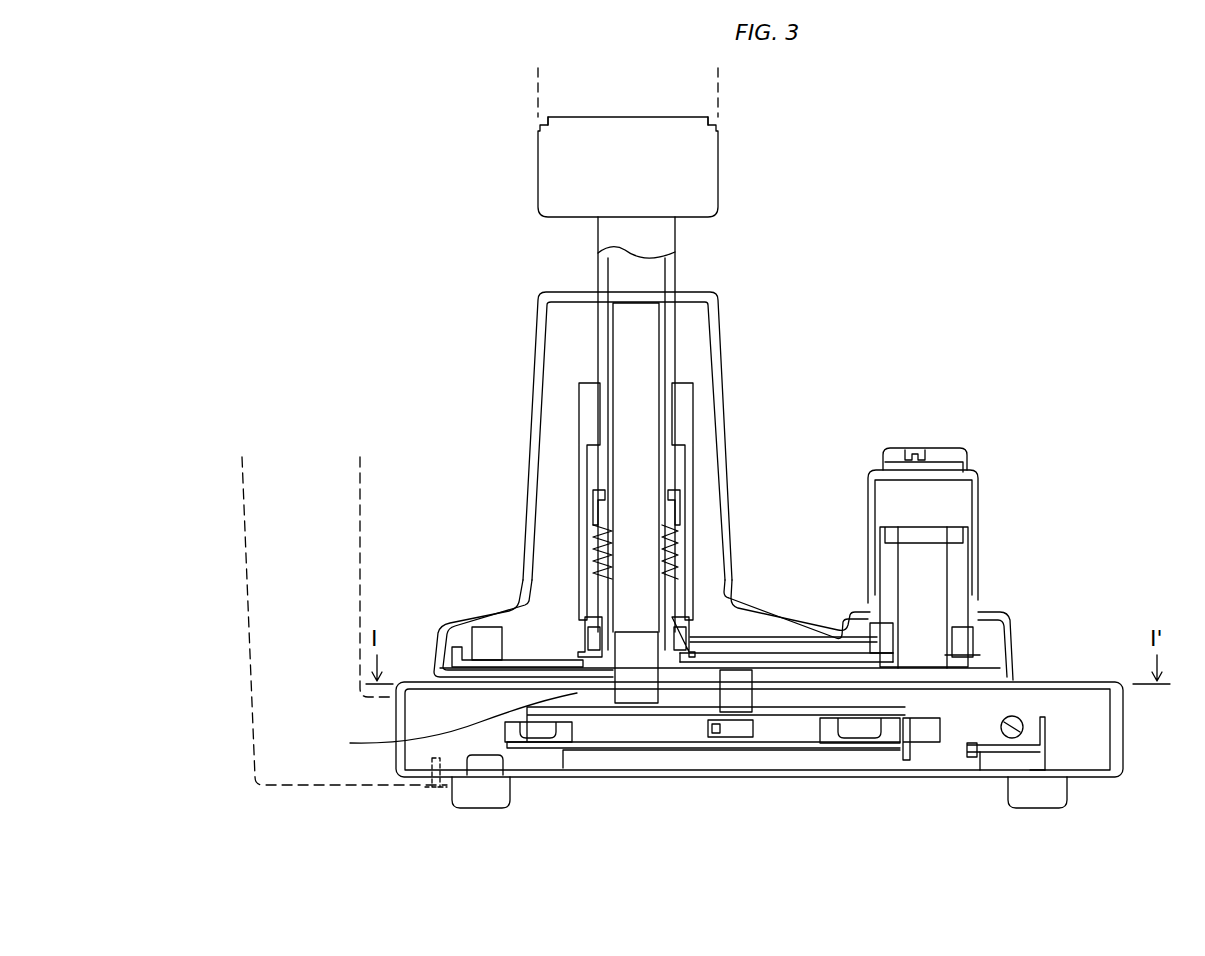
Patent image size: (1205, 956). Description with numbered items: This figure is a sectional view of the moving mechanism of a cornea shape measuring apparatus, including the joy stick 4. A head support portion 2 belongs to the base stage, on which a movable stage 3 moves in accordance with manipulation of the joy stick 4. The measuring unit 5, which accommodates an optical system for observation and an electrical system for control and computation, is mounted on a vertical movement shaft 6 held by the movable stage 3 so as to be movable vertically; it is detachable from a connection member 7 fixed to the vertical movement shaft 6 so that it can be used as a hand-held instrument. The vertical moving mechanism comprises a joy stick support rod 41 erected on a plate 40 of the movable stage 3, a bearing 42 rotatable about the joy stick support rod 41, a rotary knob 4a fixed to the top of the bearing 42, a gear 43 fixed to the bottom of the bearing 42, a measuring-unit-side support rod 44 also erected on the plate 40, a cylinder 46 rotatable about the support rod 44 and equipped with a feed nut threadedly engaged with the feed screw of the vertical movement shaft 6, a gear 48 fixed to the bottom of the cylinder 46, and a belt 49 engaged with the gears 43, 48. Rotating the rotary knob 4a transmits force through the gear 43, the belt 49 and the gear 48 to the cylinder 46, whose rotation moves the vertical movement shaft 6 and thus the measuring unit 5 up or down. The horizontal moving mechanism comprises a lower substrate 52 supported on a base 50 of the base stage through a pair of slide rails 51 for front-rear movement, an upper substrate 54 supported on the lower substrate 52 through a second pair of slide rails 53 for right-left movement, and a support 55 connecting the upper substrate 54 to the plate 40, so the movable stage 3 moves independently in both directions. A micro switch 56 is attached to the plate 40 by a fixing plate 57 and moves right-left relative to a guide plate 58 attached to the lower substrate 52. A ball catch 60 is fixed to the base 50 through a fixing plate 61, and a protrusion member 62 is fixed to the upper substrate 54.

The head support portion 2 is at (243, 602).
The movable stage 3 is at (725, 375).
The joy stick 4 is at (980, 532).
The rotary knob 4a is at (980, 523).
The measuring unit 5 is at (538, 95).
The vertical movement shaft 6 is at (602, 350).
The connection member 7 is at (700, 183).
The plate 40 is at (763, 668).
The joy stick support rod 41 is at (933, 620).
The bearing 42 is at (965, 577).
The gear 43 is at (965, 647).
The measuring-unit-side support rod 44 is at (597, 558).
The cylinder 46 is at (585, 488).
The gear 48 is at (590, 647).
The belt 49 is at (823, 647).
The base 50 is at (575, 777).
The slide rails 51 is at (622, 760).
The lower substrate 52 is at (673, 745).
The slider 53 is at (540, 732).
The upper substrate 54 is at (825, 730).
The support 55 is at (446, 725).
The micro switch 56 is at (740, 730).
The fixing plate 57 is at (723, 695).
The guide plate 58 is at (793, 740).
The ball catch 60 is at (1043, 728).
The fixing plate 61 is at (1000, 752).
The protrusion member 62 is at (930, 732).